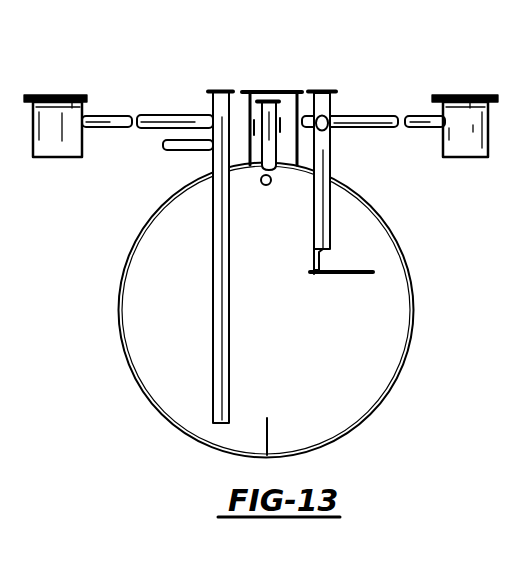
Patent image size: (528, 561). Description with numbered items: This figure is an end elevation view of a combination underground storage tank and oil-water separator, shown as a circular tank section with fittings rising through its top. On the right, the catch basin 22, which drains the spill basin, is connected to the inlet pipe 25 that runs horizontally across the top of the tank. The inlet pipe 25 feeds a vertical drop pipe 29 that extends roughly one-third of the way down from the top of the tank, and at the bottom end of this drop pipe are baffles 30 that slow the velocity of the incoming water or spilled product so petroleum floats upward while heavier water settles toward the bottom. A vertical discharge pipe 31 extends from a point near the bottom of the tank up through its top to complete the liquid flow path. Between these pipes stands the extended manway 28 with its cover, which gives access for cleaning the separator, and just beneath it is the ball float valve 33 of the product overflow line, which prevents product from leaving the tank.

The catch basin 22 is at (455, 96).
The inlet pipe 25 is at (356, 118).
The extended manway 28 is at (288, 98).
The vertical drop pipe 29 is at (331, 152).
The baffles 30 is at (345, 274).
The vertical discharge pipe 31 is at (229, 386).
The ball float valve 33 is at (263, 184).